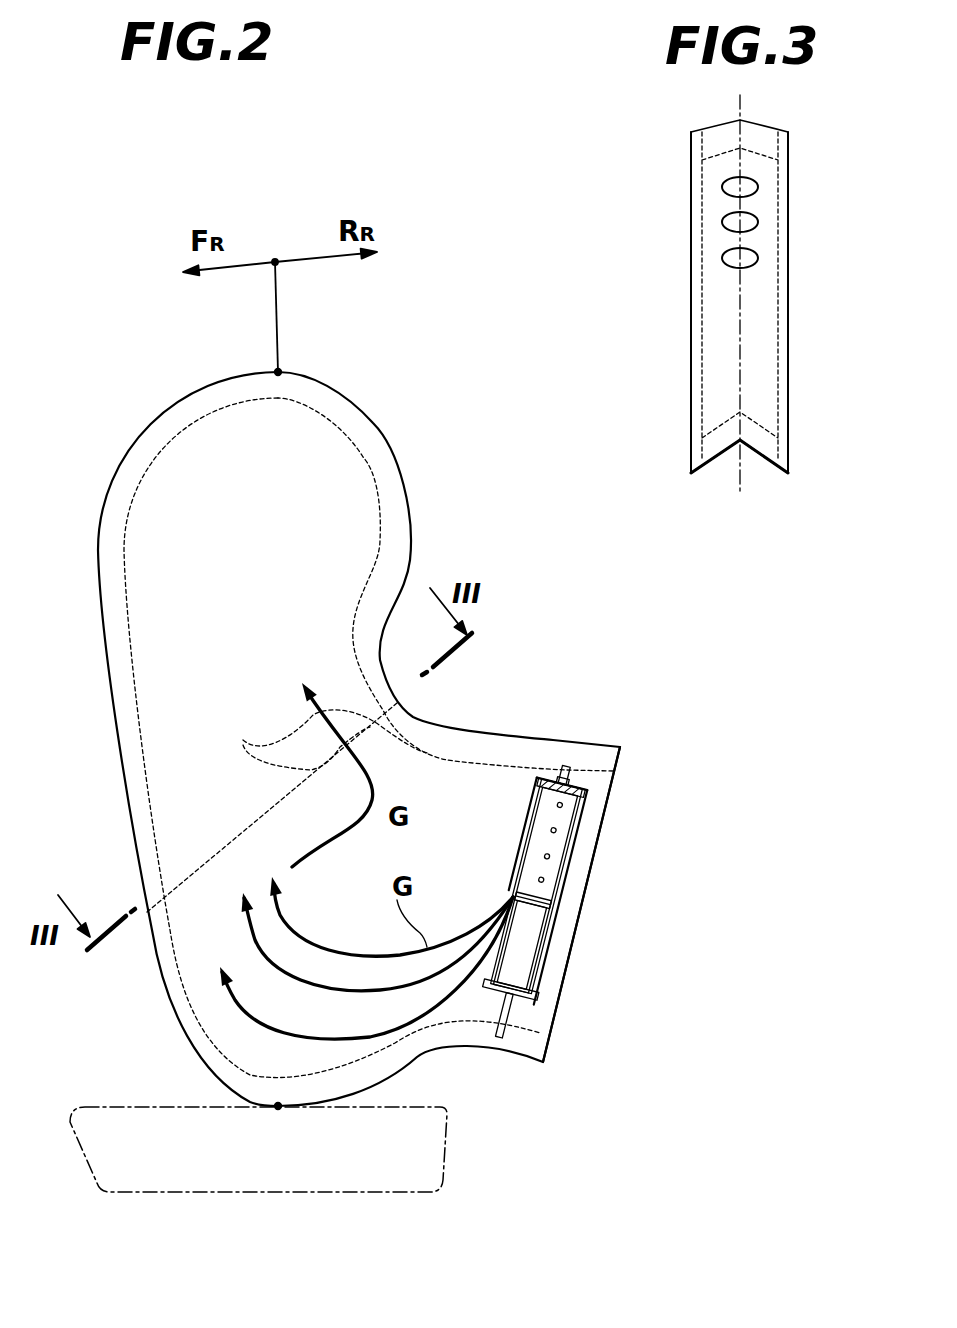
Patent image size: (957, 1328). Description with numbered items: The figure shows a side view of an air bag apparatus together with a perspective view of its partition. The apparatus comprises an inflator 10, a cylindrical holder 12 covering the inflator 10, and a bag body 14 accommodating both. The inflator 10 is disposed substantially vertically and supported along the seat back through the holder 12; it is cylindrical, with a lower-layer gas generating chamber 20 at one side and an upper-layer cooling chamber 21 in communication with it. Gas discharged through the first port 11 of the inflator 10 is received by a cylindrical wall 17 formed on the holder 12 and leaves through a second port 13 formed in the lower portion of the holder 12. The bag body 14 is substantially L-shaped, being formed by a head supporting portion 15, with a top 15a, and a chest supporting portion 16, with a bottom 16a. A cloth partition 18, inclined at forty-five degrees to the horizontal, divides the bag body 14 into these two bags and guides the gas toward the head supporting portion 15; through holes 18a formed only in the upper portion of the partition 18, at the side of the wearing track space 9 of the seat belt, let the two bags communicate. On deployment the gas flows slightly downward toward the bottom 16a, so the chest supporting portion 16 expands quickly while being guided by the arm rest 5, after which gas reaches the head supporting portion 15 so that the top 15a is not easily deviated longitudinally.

In FIG. 2, the arm rest 5 is at (458, 1172).
In FIG. 2, the wearing track space of the seat belt 9 is at (527, 519).
In FIG. 2, the inflator 10 is at (567, 812).
In FIG. 2, the first port 11 is at (553, 853).
In FIG. 2, the cylindrical holder 12 is at (590, 855).
In FIG. 2, the second port 13 is at (503, 947).
In FIG. 2, the bag body 14 is at (560, 732).
In FIG. 2, the head supporting portion 15 is at (337, 483).
In FIG. 2, the top of the head supporting portion 15a is at (290, 366).
In FIG. 2, the chest supporting portion 16 is at (313, 930).
In FIG. 2, the bottom of the chest supporting portion 16a is at (278, 1106).
In FIG. 2, the cylindrical wall 17 is at (526, 837).
In FIG. 2, the partition 18 is at (208, 864).
In FIG. 3, the partition 18 is at (691, 183).
In FIG. 2, the through holes 18a is at (248, 722).
In FIG. 3, the through holes 18a is at (722, 220).
In FIG. 2, the gas generating chamber 20 is at (533, 937).
In FIG. 2, the cooling chamber 21 is at (553, 885).